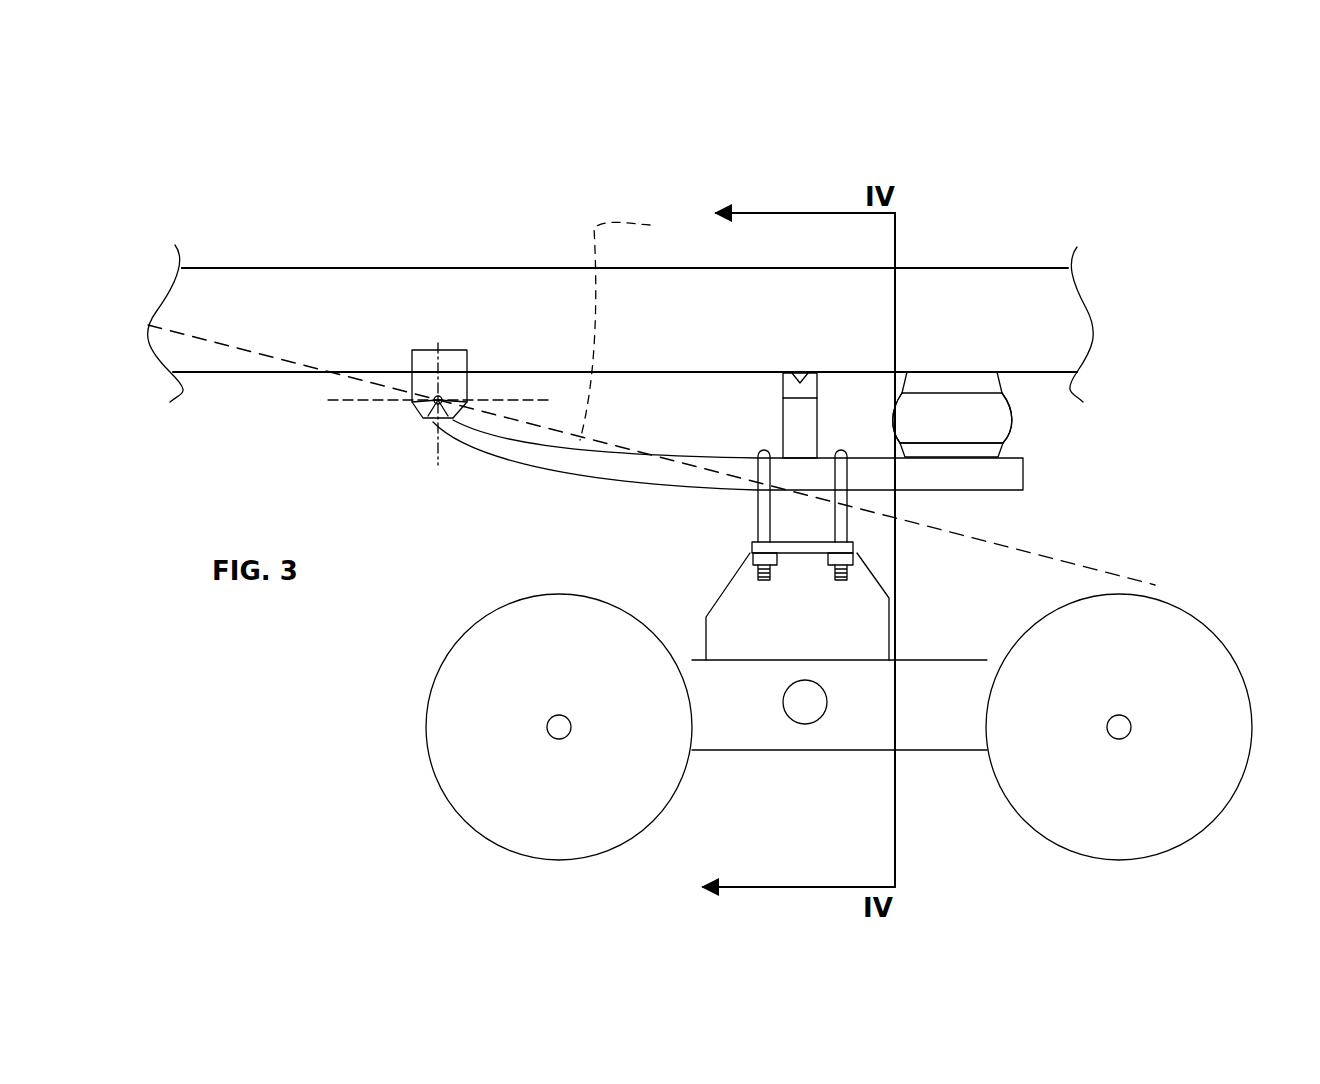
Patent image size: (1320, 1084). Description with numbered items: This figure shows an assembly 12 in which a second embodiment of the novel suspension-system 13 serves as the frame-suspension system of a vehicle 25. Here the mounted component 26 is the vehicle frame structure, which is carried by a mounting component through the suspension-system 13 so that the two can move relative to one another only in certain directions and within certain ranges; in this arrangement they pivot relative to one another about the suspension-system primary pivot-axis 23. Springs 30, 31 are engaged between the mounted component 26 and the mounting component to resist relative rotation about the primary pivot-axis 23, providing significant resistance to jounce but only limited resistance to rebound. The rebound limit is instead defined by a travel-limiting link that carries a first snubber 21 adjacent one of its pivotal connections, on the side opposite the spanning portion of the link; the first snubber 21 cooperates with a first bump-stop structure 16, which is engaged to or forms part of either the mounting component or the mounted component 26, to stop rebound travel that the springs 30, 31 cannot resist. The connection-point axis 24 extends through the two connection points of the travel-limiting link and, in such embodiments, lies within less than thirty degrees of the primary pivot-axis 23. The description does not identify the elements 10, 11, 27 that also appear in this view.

The vehicle frame member 10 is at (557, 307).
The U-bolt 11 is at (793, 523).
The assembly 12 is at (812, 182).
The suspension-system 13 is at (1008, 523).
The first bump-stop structure 16 is at (788, 397).
The first snubber 21 is at (782, 375).
The suspension-system primary pivot-axis 23 is at (428, 419).
The connection-point axis 24 is at (639, 323).
The vehicle 25 is at (745, 188).
The mounted component 26 is at (435, 300).
The trailing arm 27 is at (545, 503).
The spring 30 is at (953, 410).
The spring 31 is at (985, 415).